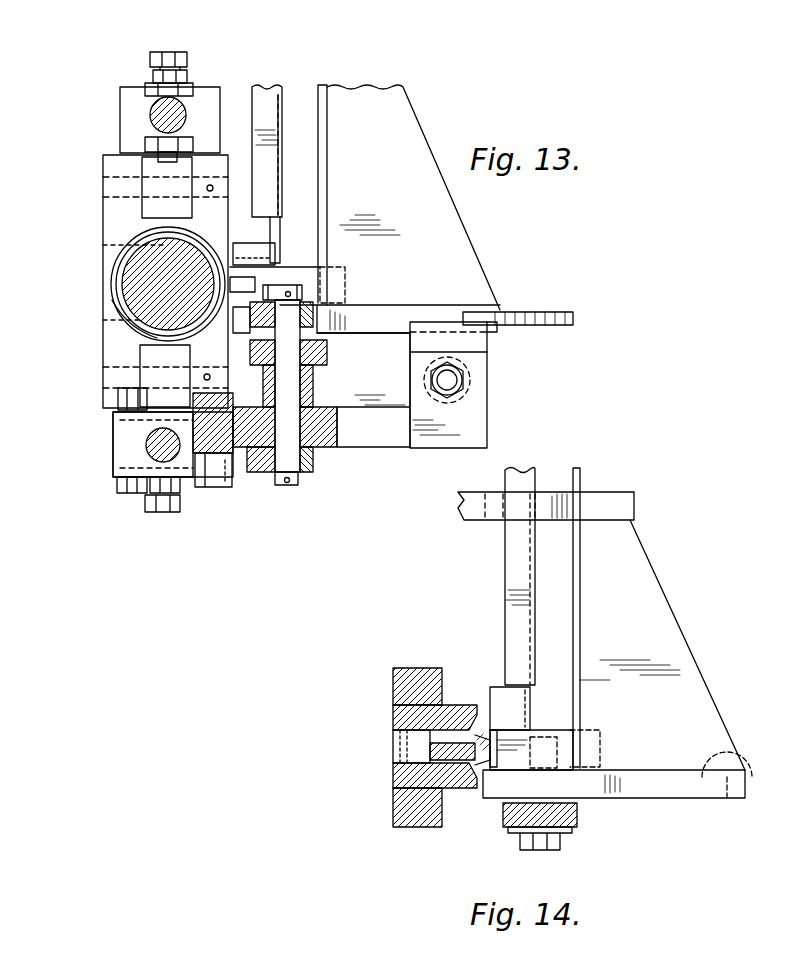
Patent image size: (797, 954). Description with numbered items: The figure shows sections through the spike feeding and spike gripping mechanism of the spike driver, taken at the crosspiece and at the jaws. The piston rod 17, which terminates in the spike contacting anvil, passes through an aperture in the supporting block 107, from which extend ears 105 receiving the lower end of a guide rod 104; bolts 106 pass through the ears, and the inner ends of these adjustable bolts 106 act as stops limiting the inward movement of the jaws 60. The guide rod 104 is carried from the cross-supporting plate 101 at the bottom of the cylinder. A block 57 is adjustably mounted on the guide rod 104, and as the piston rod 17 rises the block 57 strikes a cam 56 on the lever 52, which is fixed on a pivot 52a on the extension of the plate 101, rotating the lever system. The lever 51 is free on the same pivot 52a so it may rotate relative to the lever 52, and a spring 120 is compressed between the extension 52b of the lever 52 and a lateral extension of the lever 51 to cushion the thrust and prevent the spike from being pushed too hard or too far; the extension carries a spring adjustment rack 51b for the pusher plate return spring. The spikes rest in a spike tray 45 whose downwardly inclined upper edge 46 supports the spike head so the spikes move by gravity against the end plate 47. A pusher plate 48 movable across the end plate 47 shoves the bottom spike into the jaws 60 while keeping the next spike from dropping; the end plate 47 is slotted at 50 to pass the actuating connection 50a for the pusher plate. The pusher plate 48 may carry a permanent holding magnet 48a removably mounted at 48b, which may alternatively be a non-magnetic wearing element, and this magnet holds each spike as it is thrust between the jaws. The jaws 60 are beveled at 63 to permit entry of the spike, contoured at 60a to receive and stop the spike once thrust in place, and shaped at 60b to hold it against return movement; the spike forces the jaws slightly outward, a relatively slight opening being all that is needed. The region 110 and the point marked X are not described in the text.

In FIG. 13, the piston rod 17 is at (124, 286).
In FIG. 13, the spike tray 45 is at (330, 163).
In FIG. 14, the spike tray 45 is at (582, 481).
In FIG. 13, the downwardly inclined upper edge 46 is at (272, 185).
In FIG. 14, the downwardly inclined upper edge 46 is at (508, 574).
In FIG. 13, the end plate 47 is at (375, 330).
In FIG. 14, the end plate 47 is at (627, 783).
In FIG. 13, the pusher plate 48 is at (313, 268).
In FIG. 14, the pusher plate 48 is at (568, 733).
In FIG. 13, the permanent holding magnet 48a is at (240, 265).
In FIG. 14, the permanent holding magnet 48a is at (508, 726).
In FIG. 14, the mounting element 48b is at (495, 773).
In FIG. 14, the slot 50 is at (728, 755).
In FIG. 14, the actuating connection 50a is at (555, 845).
In FIG. 13, the lever 51 is at (328, 367).
In FIG. 14, the lever 51 is at (581, 816).
In FIG. 13, the spring adjustment rack 51b is at (565, 312).
In FIG. 13, the lever 52 is at (380, 450).
In FIG. 13, the pivot 52a is at (288, 488).
In FIG. 13, the extension 52b is at (473, 427).
In FIG. 13, the cam 56 is at (220, 478).
In FIG. 13, the block 57 is at (115, 438).
In FIG. 13, the jaw 60 is at (143, 172).
In FIG. 14, the jaw 60 is at (392, 661).
In FIG. 14, the jaw contour 60a is at (400, 708).
In FIG. 14, the jaw holding contour 60b is at (440, 684).
In FIG. 14, the bevel 63 is at (475, 730).
In FIG. 13, the cross-supporting plate 101 is at (313, 314).
In FIG. 13, the guide rod 104 is at (160, 115).
In FIG. 13, the ear 105 is at (188, 84).
In FIG. 13, the bolt 106 is at (179, 63).
In FIG. 13, the supporting block 107 is at (103, 220).
In FIG. 13, the housing bore 110 is at (120, 313).
In FIG. 13, the spring 120 is at (463, 376).
In FIG. 14, the clearance gap X is at (398, 755).